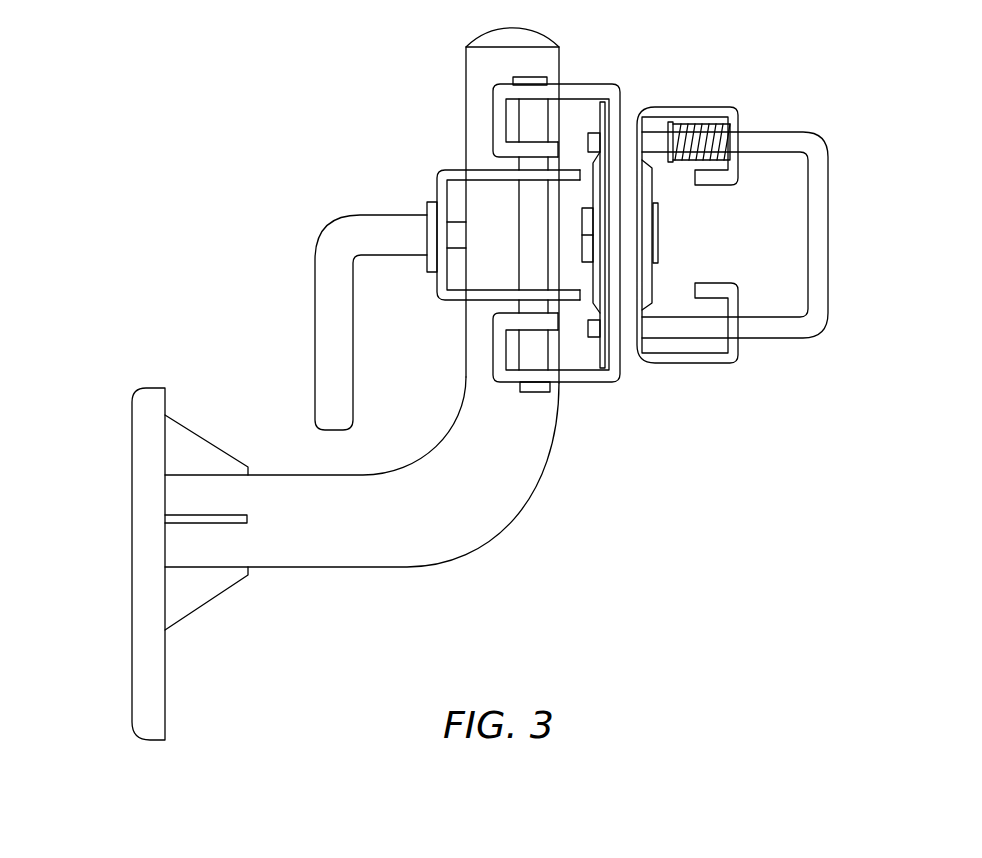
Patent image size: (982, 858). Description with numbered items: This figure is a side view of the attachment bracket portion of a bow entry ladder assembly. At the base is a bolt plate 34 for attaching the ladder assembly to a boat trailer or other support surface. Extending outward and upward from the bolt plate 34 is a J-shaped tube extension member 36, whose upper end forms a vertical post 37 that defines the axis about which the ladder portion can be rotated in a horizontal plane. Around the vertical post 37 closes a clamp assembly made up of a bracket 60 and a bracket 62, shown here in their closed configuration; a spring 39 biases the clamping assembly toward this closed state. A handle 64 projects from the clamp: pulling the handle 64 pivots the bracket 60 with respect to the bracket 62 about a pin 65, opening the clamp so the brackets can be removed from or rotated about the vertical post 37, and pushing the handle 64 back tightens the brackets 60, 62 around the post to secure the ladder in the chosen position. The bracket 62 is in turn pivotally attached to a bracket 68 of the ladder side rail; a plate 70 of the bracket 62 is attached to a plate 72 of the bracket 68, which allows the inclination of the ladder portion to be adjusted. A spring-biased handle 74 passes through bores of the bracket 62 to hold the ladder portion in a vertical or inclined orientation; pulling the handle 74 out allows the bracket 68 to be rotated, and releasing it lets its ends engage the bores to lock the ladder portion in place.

The bolt plate 34 is at (133, 456).
The J-shaped tube extension member 36 is at (535, 478).
The vertical post 37 is at (468, 92).
The spring 39 is at (690, 128).
The bracket 60 is at (440, 172).
The bracket 62 is at (597, 85).
The handle 64 is at (318, 345).
The pin 65 is at (535, 347).
The bracket 68 is at (738, 365).
The plate 70 is at (592, 160).
The plate 72 is at (655, 280).
The spring-biased handle 74 is at (793, 145).